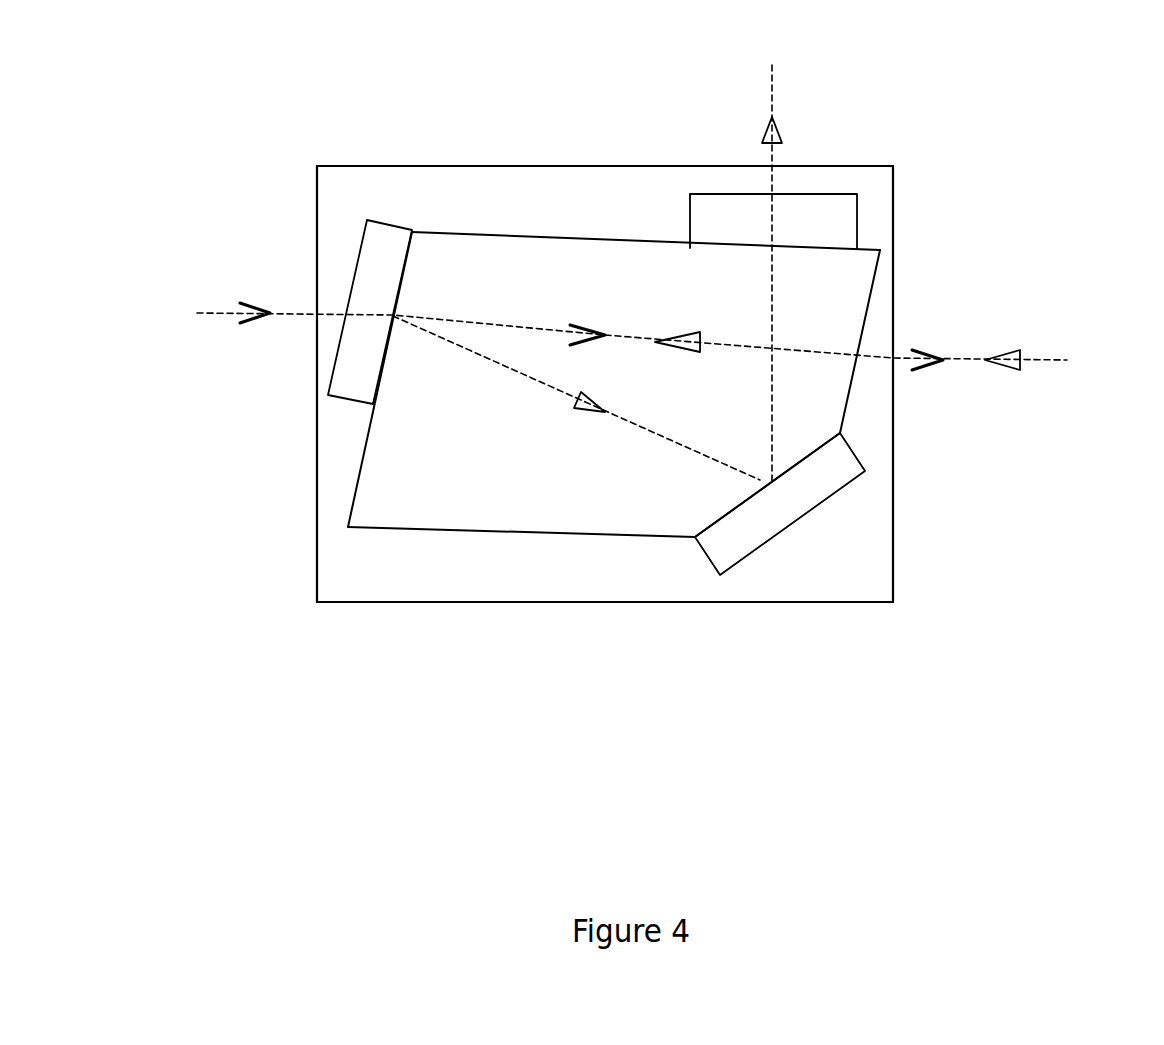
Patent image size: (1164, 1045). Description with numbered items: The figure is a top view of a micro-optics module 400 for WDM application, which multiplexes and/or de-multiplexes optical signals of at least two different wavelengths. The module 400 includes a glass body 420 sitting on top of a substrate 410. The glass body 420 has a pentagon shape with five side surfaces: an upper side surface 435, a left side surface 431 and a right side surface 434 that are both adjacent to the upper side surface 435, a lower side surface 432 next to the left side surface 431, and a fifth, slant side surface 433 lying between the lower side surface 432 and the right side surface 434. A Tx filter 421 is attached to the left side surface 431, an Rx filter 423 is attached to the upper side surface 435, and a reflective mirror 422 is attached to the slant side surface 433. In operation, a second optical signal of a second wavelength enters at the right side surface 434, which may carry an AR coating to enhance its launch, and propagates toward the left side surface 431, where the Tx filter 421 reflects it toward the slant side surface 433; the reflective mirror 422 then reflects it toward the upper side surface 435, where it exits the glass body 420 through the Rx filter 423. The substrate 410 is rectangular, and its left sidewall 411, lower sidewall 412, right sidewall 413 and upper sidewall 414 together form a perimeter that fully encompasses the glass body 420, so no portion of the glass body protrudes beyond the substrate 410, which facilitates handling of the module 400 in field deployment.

The micro-optics module 400 is at (620, 397).
The substrate 410 is at (623, 396).
The left sidewall 411 is at (317, 427).
The lower sidewall 412 is at (623, 602).
The right sidewall 413 is at (894, 468).
The upper sidewall 414 is at (560, 166).
The glass body 420 is at (580, 410).
The Tx filter 421 is at (378, 277).
The reflective mirror 422 is at (785, 508).
The Rx filter 423 is at (813, 225).
The left side surface 431 is at (363, 453).
The lower side surface 432 is at (422, 528).
The 5th side surface 433 is at (735, 510).
The right side surface 434 is at (868, 285).
The upper side surface 435 is at (489, 232).